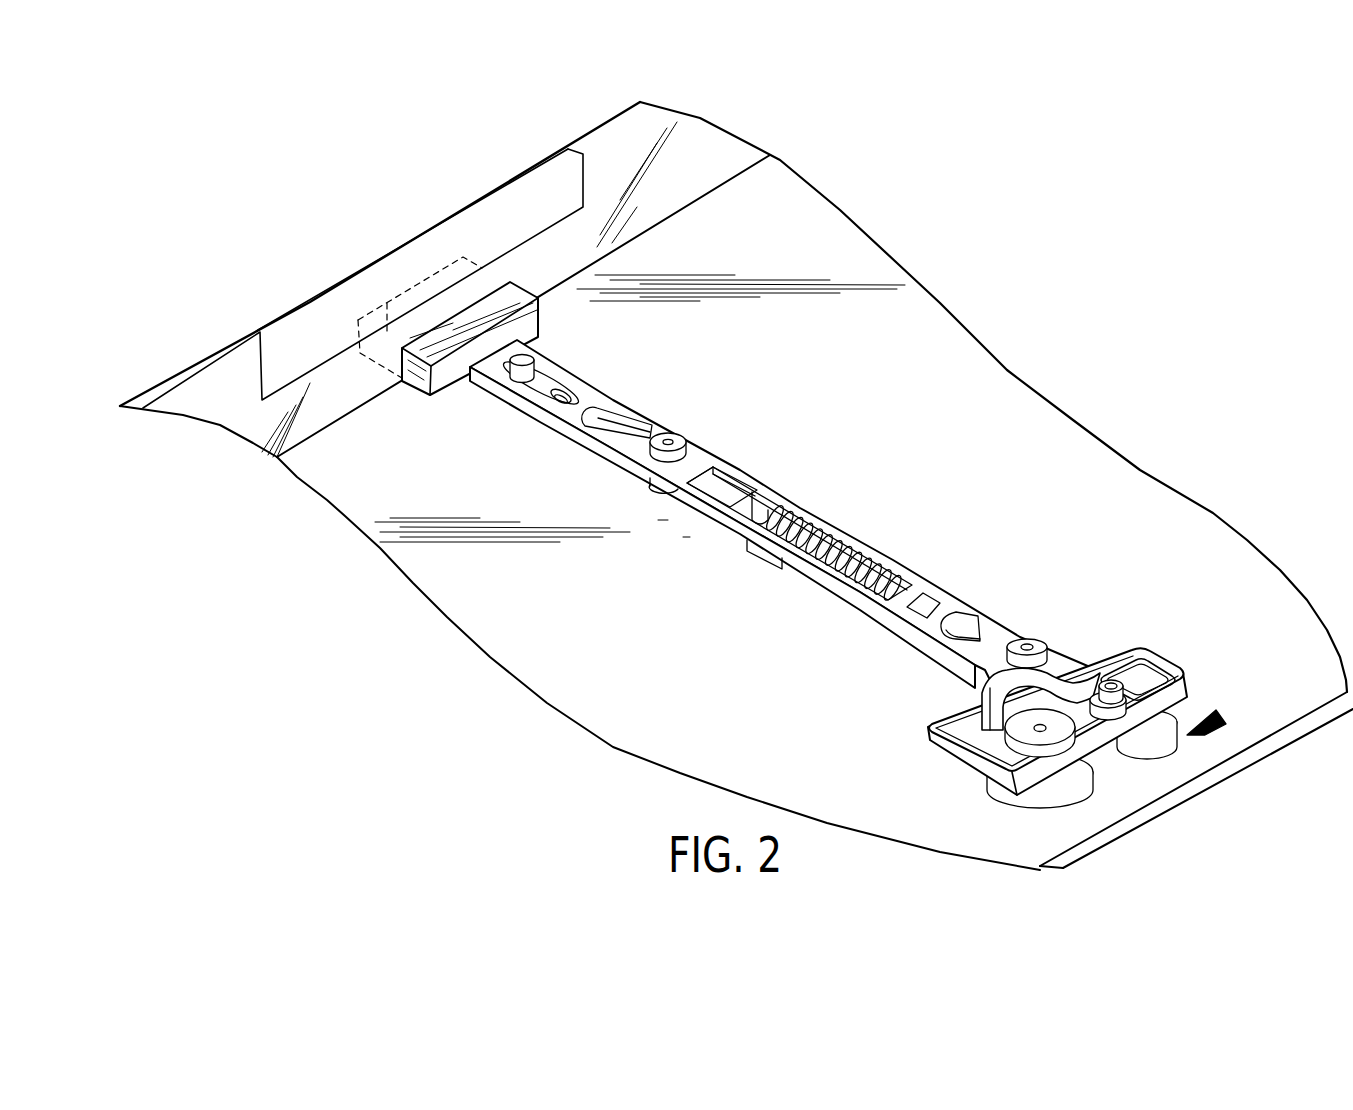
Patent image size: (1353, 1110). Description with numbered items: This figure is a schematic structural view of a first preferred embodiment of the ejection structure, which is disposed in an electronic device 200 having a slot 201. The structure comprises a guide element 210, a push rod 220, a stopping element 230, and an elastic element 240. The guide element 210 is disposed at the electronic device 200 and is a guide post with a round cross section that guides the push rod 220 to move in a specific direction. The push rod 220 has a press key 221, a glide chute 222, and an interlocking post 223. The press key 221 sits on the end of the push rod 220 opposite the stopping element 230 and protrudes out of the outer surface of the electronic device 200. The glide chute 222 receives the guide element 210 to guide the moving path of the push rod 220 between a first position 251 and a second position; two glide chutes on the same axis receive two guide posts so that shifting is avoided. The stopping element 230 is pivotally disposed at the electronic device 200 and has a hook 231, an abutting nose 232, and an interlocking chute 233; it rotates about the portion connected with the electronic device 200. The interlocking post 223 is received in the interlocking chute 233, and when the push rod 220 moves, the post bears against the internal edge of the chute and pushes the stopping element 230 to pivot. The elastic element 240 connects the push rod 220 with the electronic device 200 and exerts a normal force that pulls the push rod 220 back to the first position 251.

The electronic device 200 is at (174, 368).
The slot 201 is at (496, 212).
The guide element 210 is at (663, 458).
The push rod 220 is at (700, 450).
The press key 221 is at (428, 393).
The glide chute 222 is at (607, 428).
The interlocking post 223 is at (1103, 672).
The stopping element 230 is at (1132, 652).
The hook 231 is at (978, 705).
The abutting nose 232 is at (926, 768).
The interlocking chute 233 is at (1187, 670).
The elastic element 240 is at (783, 495).
The first position 251 is at (1235, 724).